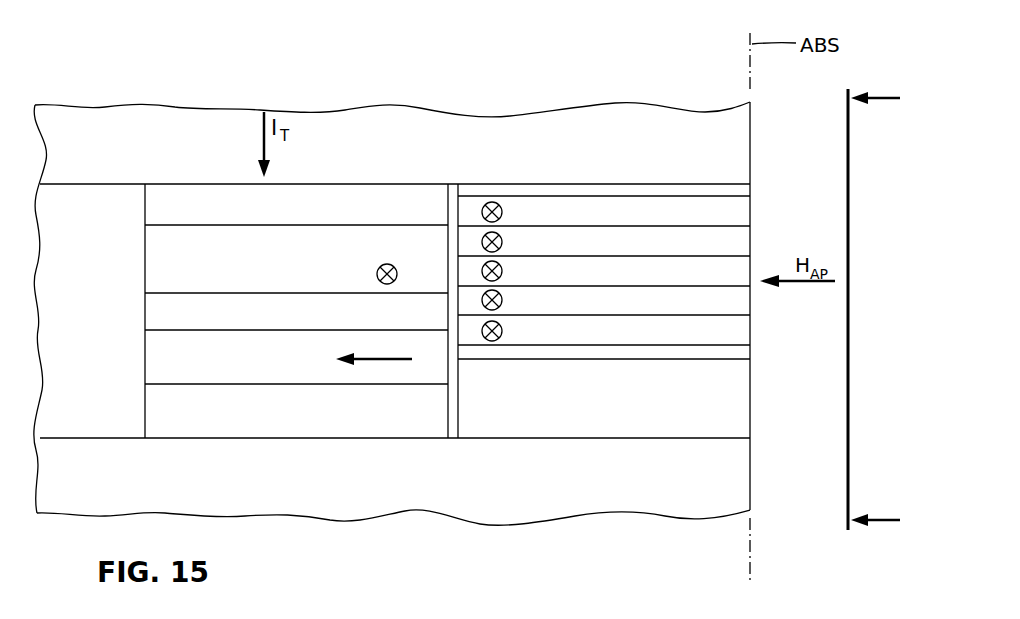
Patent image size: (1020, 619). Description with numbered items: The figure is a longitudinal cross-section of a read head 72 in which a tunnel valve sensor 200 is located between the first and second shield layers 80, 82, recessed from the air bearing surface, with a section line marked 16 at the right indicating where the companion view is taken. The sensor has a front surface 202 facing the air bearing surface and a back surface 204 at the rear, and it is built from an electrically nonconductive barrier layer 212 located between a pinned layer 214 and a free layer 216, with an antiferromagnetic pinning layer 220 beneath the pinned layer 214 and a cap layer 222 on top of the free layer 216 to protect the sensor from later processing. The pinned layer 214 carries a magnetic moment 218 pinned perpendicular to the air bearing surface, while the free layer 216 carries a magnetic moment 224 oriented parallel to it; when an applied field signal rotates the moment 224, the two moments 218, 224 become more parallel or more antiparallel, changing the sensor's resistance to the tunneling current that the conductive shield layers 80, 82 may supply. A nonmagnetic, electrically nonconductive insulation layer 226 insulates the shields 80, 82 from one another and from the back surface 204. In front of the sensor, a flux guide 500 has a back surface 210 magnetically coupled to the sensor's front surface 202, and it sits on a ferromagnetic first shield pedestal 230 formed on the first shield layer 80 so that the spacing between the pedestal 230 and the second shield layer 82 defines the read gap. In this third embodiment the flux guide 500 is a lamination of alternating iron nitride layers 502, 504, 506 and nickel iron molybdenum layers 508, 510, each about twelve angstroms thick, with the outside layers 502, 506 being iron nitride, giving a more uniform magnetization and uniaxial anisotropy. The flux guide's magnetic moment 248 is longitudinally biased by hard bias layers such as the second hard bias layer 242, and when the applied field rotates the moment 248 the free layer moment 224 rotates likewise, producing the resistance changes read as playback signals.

The read head 72 is at (158, 70).
The second shield layer 82 is at (362, 117).
The first shield layer 80 is at (340, 517).
The tunnel valve sensor 200 is at (196, 176).
The insulation layer 226 is at (90, 425).
The cap layer 222 is at (148, 204).
The free layer 216 is at (148, 242).
The back surface 204 is at (142, 263).
The magnetic moment 224 is at (376, 274).
The barrier layer 212 is at (148, 312).
The pinned layer 214 is at (148, 362).
The magnetic moment 218 is at (382, 362).
The antiferromagnetic pinning layer 220 is at (195, 425).
The front surface 202 is at (448, 215).
The second hard bias layer 242 is at (456, 418).
The back surface 210 is at (458, 369).
The first shield pedestal 230 is at (752, 413).
The flux guide 500 is at (646, 184).
The iron nitride layer 506 is at (752, 213).
The nickel iron molybdenum layer 510 is at (752, 241).
The iron nitride layer 504 is at (468, 271).
The nickel iron molybdenum layer 508 is at (752, 302).
The iron nitride layer 502 is at (752, 329).
The magnetic moment 248 is at (502, 213).
The section line 16- 16 is at (874, 311).